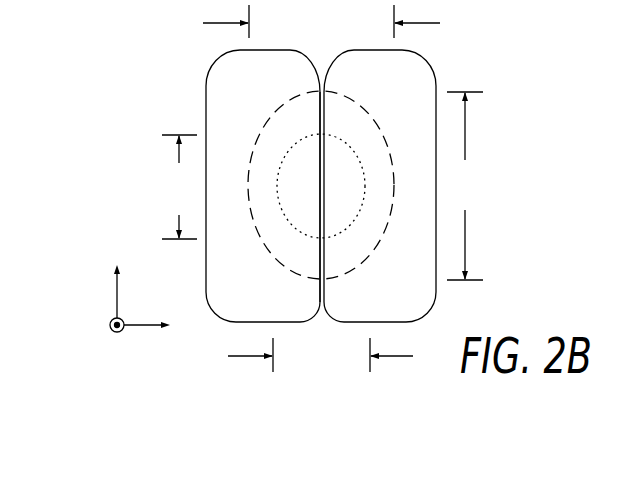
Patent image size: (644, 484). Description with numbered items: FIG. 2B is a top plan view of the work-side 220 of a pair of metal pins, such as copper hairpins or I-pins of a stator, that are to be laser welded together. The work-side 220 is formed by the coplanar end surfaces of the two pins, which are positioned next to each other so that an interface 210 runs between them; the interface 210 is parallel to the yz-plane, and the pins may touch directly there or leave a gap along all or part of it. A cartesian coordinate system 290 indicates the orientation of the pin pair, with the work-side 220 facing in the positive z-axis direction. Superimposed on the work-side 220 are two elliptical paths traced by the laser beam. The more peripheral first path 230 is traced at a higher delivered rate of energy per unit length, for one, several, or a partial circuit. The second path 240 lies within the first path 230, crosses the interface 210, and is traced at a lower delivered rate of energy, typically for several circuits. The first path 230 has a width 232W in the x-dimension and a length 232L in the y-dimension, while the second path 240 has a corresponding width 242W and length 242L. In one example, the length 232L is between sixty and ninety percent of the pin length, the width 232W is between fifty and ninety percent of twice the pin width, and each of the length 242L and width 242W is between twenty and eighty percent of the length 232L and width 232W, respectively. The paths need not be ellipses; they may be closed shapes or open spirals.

The interface 210 is at (322, 110).
The work-side 220 is at (184, 63).
The first path 230 is at (248, 188).
The second path 240 is at (365, 187).
The cartesian coordinate system 290 is at (138, 346).
The width of first path 232W is at (321, 21).
The length of first path 232L is at (465, 186).
The width of second path 242W is at (320, 355).
The length of second path 242L is at (179, 187).